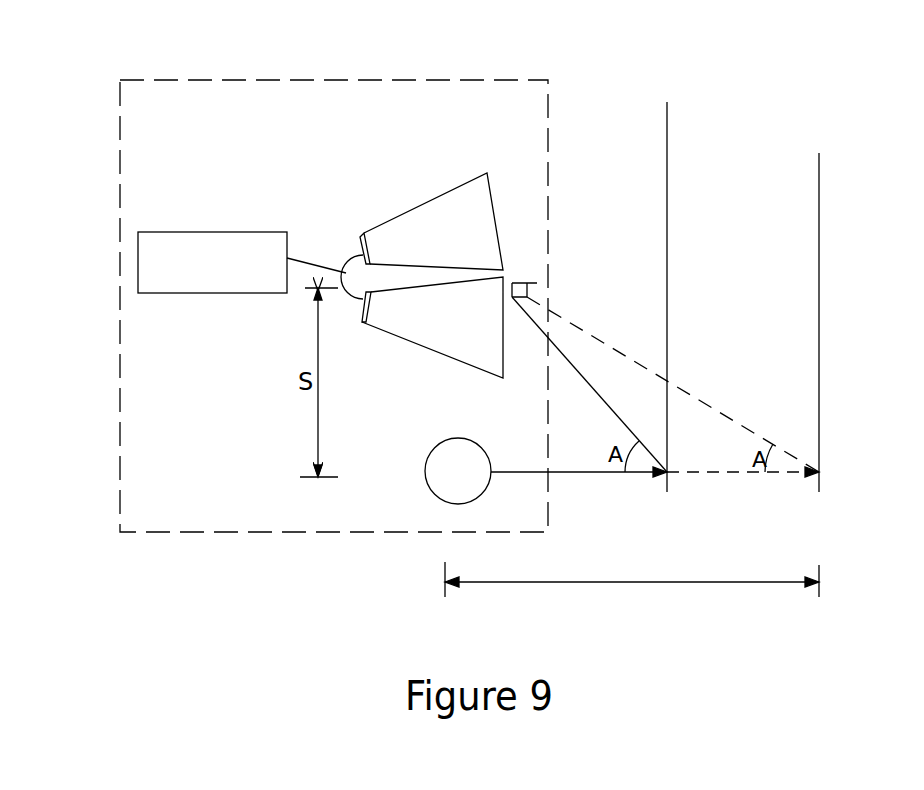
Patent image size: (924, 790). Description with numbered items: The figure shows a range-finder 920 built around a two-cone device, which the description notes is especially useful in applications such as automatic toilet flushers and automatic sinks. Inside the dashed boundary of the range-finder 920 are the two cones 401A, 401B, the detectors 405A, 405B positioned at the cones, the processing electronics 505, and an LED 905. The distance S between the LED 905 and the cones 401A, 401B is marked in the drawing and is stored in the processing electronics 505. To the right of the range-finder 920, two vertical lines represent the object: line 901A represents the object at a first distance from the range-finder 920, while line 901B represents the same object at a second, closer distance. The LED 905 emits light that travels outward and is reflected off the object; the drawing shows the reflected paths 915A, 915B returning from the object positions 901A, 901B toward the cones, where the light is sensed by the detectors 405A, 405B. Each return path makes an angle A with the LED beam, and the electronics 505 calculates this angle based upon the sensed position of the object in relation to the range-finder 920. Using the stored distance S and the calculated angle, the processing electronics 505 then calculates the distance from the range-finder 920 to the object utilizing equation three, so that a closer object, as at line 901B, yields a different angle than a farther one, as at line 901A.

The range-finder 920 is at (228, 80).
The processing electronics 505 is at (173, 232).
The detector 405A is at (360, 234).
The detector 405B is at (363, 322).
The cone 401A is at (437, 198).
The cone 401B is at (435, 350).
The LED 905 is at (424, 479).
The beam path to target 901A 915A is at (709, 404).
The beam path to target 901B 915B is at (582, 376).
The line representing object at first distance 901A is at (819, 180).
The line representing object at second distance 901B is at (667, 122).